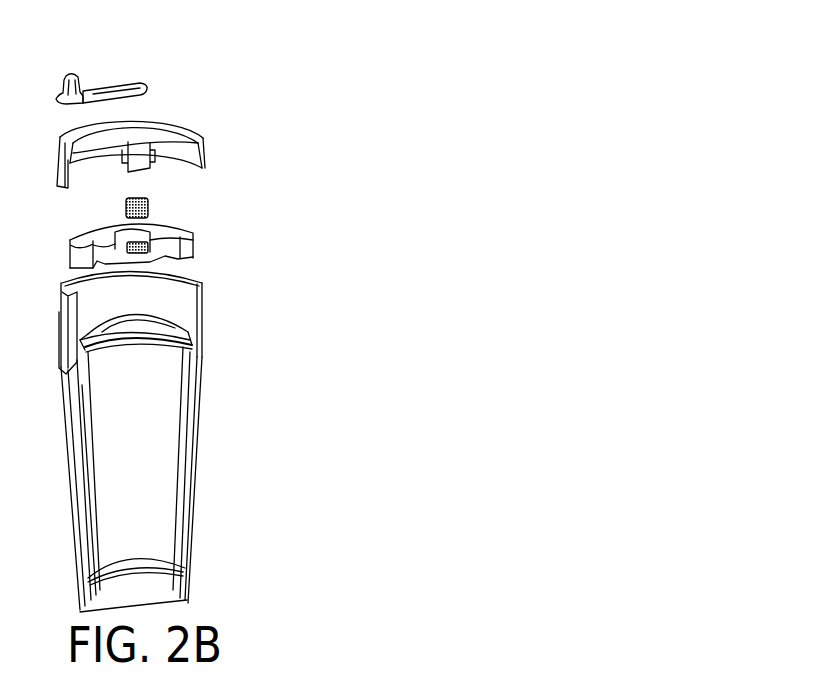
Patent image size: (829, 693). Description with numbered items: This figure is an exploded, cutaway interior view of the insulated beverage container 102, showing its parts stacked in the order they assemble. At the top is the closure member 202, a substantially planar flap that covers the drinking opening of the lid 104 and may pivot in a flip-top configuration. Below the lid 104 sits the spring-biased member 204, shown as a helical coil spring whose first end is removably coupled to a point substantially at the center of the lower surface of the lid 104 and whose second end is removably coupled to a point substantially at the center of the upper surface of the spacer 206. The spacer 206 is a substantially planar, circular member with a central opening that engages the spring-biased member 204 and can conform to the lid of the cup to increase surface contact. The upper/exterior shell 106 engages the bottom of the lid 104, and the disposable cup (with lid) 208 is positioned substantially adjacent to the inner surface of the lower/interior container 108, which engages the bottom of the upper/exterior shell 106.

The insulated beverage container 102 is at (210, 53).
The closure member 202 is at (148, 92).
The lid 104 is at (190, 160).
The spring-biased member 204 is at (150, 205).
The spacer 206 is at (193, 250).
The upper/exterior shell 106 is at (203, 325).
The disposable cup (with lid) 208 is at (193, 342).
The lower/interior container 108 is at (197, 482).